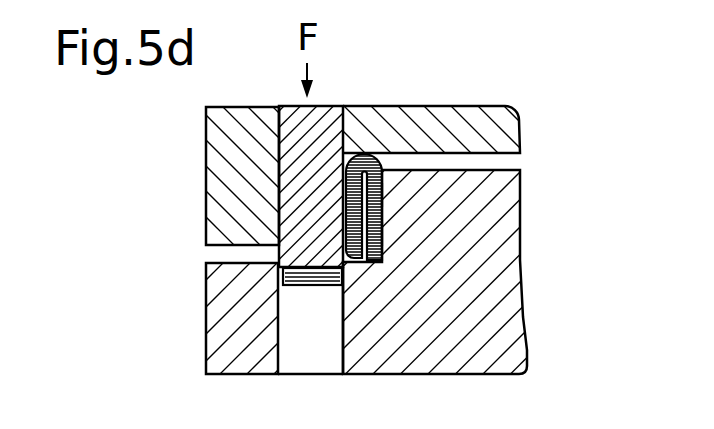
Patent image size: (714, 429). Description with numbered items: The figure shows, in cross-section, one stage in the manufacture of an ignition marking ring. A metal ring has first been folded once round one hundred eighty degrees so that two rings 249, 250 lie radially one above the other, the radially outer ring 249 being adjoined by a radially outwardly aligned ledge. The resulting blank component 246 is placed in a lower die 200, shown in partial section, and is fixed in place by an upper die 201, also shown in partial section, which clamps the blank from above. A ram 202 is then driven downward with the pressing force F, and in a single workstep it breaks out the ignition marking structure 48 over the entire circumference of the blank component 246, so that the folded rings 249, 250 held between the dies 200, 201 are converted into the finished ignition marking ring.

The lower die 200 is at (487, 280).
The upper die 201 is at (495, 123).
The ram 202 is at (300, 225).
The radially outer ring 249 is at (356, 168).
The blank component 246 is at (383, 195).
The ring 250 is at (383, 234).
The ignition marking structure 48 is at (283, 258).